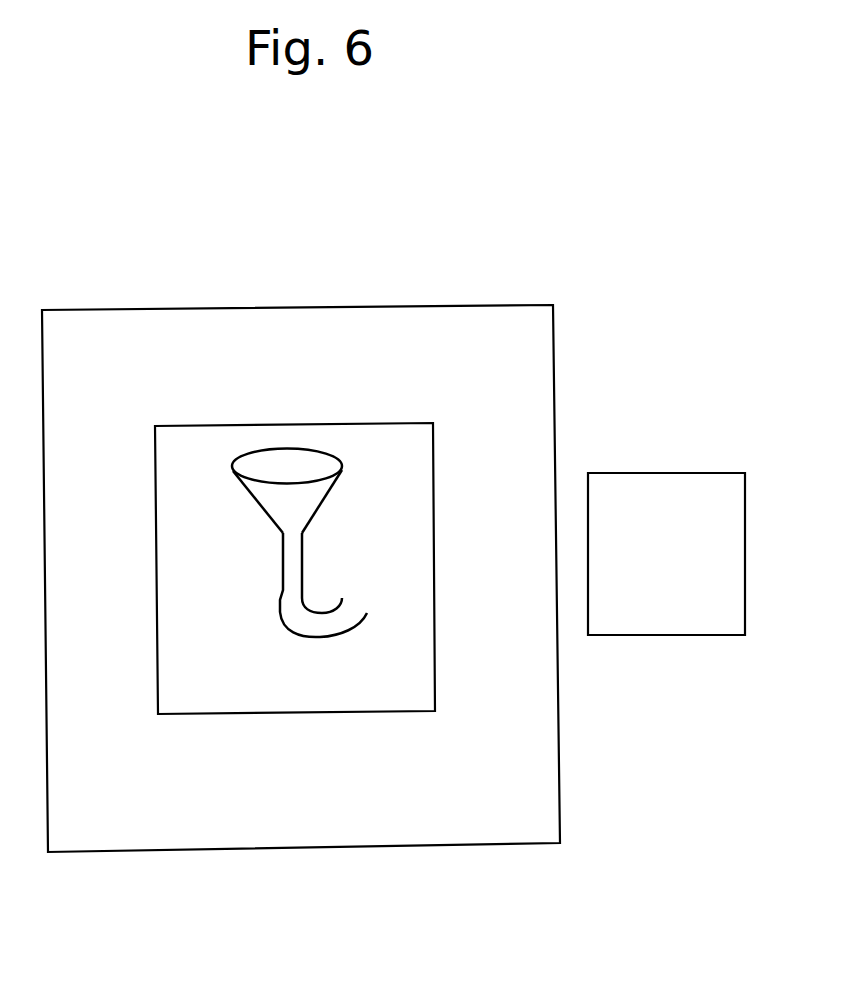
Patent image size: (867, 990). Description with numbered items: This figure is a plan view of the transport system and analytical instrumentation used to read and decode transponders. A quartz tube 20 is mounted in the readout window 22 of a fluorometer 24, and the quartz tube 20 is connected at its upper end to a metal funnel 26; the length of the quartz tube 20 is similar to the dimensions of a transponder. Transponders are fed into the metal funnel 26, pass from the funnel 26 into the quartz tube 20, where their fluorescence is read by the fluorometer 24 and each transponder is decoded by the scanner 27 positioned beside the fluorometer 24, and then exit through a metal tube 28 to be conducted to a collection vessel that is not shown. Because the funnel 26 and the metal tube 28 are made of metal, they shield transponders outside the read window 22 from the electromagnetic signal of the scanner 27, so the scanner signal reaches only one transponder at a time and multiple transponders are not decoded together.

The quartz tube 20 is at (282, 565).
The readout window 22 is at (320, 712).
The fluorometer 24 is at (555, 342).
The metal funnel 26 is at (278, 463).
The scanner 27 is at (663, 473).
The metal tube 28 is at (288, 632).